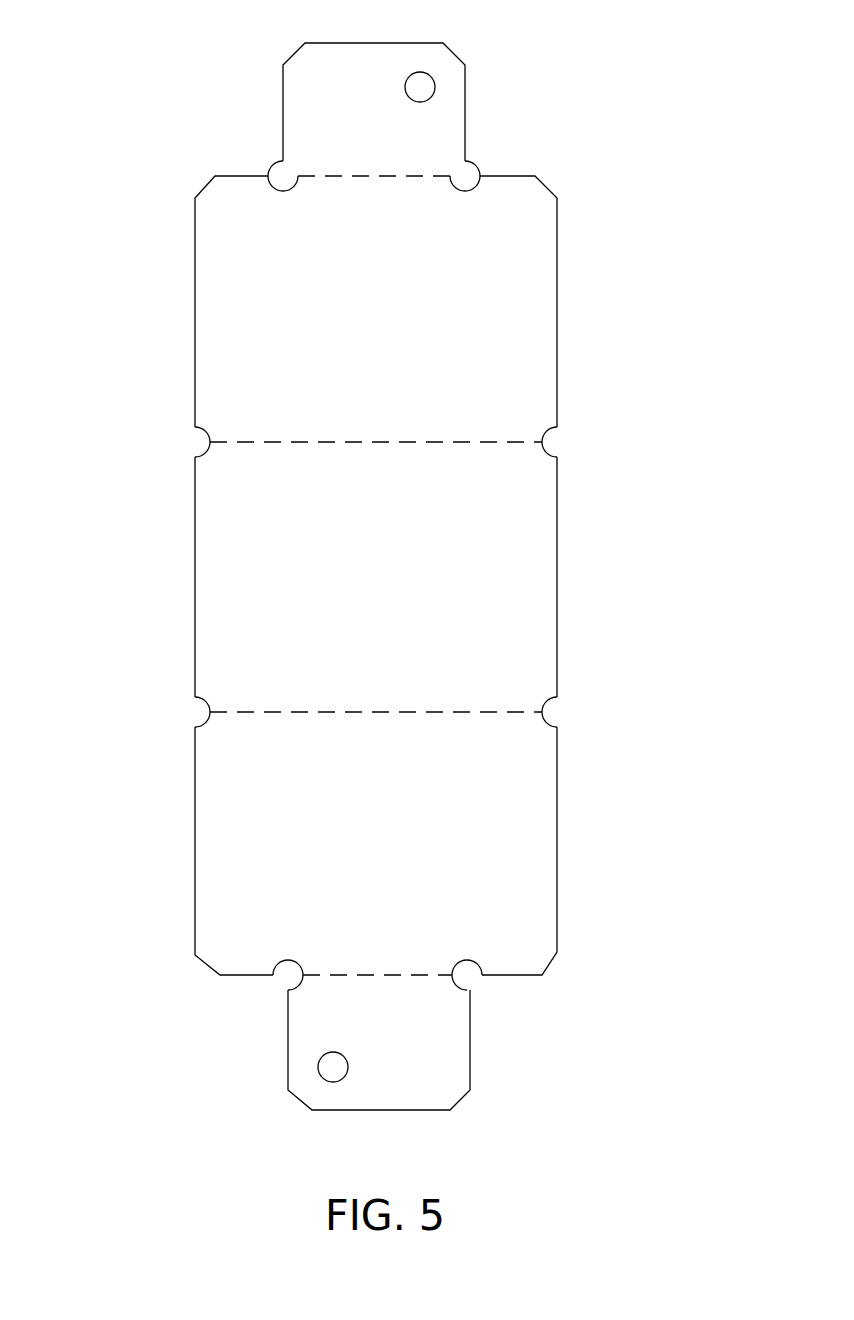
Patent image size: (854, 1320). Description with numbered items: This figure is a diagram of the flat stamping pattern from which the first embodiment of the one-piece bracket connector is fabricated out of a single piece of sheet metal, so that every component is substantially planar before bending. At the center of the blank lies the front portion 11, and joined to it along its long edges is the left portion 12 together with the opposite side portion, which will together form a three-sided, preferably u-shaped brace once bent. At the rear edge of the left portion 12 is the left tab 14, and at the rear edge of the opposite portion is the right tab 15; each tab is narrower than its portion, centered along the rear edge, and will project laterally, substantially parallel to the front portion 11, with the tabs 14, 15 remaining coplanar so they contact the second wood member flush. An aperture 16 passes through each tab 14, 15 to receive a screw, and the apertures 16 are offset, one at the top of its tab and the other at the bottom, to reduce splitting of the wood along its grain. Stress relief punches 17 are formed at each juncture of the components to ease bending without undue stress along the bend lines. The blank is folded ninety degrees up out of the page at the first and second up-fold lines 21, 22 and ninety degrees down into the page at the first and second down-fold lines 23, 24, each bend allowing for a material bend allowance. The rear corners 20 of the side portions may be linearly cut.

The front portion 11 is at (558, 577).
The left portion 12 is at (558, 318).
The left tab 14 is at (467, 113).
The right tab 15 is at (470, 1050).
The aperture 16 is at (435, 73).
The stress relief punch 17 is at (192, 445).
The rear corner 20 is at (207, 962).
The first up-fold line 21 is at (297, 441).
The second up-fold line 22 is at (405, 712).
The first down-fold line 23 is at (392, 176).
The second down-fold line 24 is at (365, 975).